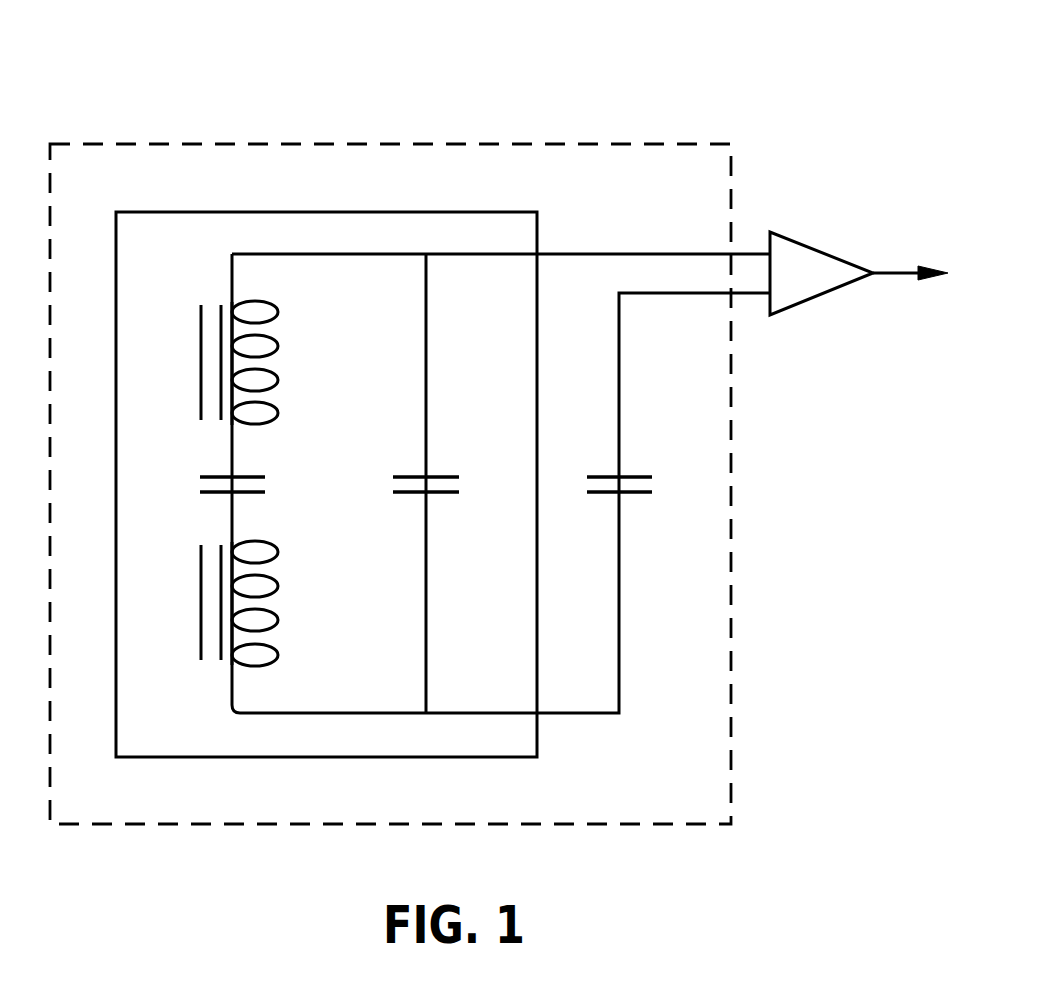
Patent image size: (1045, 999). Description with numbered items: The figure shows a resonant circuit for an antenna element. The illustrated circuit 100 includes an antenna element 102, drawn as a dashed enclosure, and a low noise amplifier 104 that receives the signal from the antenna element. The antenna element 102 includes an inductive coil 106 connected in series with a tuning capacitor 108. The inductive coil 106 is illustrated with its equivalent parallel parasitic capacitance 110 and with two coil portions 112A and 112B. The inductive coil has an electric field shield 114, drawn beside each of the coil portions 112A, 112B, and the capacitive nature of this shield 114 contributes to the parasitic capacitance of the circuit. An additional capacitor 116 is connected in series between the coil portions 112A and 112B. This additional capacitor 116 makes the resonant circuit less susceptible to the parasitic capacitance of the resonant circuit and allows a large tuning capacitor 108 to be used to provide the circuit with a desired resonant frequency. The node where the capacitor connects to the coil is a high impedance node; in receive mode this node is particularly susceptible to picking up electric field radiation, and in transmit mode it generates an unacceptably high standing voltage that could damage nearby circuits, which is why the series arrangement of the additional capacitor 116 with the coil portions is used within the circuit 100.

The circuit 100 is at (790, 92).
The antenna element 102 is at (394, 144).
The low noise amplifier 104 is at (823, 252).
The inductive coil 106 is at (327, 211).
The tuning capacitor 108 is at (638, 476).
The parallel parasitic capacitance 110 is at (444, 475).
The coil portion 112A is at (272, 342).
The coil portion 112B is at (272, 580).
The electric field shield 114 is at (200, 358).
The additional capacitor 116 is at (249, 475).